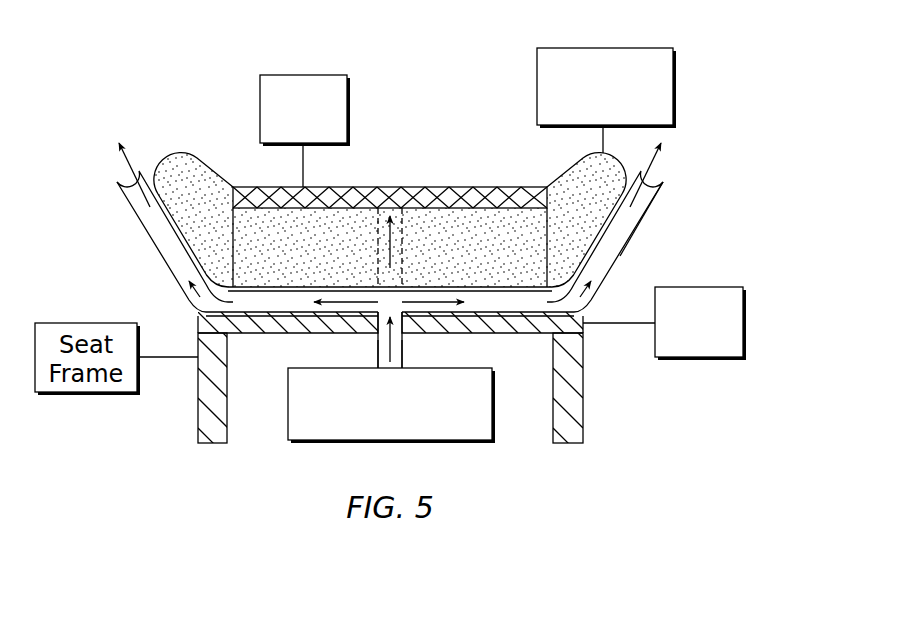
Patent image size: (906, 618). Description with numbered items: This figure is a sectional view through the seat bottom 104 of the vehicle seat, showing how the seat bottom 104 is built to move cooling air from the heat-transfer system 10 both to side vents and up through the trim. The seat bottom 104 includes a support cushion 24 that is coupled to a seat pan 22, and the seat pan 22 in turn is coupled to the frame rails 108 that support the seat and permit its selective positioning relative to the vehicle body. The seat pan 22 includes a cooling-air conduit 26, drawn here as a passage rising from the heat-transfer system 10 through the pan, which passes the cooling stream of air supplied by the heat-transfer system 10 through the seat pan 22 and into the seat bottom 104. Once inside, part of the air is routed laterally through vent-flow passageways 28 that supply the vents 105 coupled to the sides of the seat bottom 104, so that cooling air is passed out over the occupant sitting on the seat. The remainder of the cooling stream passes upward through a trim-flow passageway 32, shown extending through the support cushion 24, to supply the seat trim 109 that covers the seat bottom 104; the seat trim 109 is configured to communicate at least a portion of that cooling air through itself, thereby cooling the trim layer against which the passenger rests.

The heat-transfer system 10 is at (498, 449).
The seat pan 22 is at (700, 287).
The support cushion 24 is at (582, 48).
The cooling-air conduit 26 is at (406, 342).
The vent-flow passageways 28 is at (626, 251).
The trim-flow passageway 32 is at (409, 244).
The seat bottom 104 is at (192, 131).
The vents 105 is at (658, 194).
The frame rails 108 is at (588, 399).
The seat trim 109 is at (320, 75).